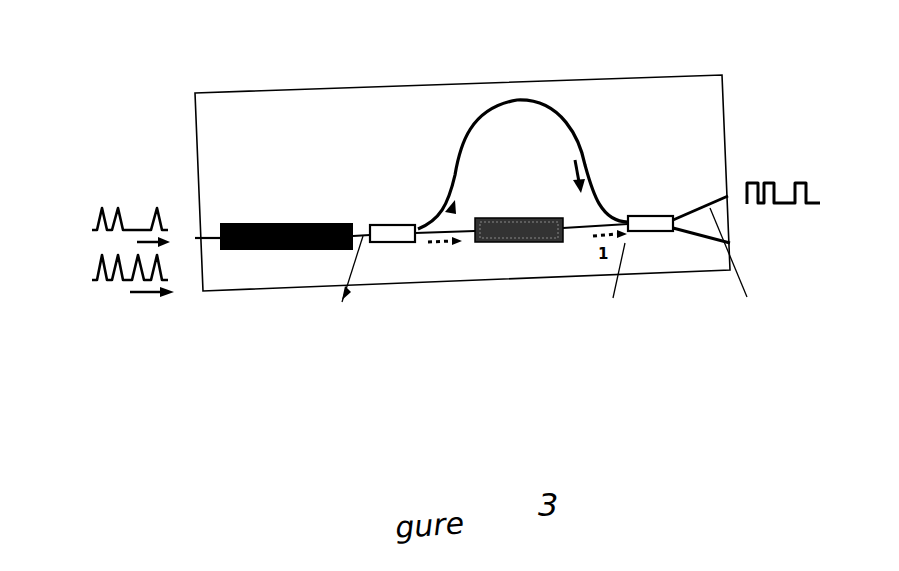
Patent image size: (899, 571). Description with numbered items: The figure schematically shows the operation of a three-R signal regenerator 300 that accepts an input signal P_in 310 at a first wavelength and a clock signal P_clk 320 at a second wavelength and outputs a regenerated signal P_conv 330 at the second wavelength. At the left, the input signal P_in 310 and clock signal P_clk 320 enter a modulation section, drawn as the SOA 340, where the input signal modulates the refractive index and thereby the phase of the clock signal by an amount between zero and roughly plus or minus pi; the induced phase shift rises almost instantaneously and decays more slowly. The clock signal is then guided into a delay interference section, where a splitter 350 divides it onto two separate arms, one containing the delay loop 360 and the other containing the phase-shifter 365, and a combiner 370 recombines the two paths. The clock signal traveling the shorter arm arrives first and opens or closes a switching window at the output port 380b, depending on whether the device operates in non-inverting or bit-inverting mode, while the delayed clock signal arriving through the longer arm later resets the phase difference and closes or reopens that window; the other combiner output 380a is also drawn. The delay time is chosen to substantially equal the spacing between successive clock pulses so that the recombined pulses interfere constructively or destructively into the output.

The 3R signal regenerator 300 is at (797, 62).
The input signal P_in 310 is at (83, 216).
The clock signal P_clk 320 is at (83, 276).
The regenerated signal P_conv 330 is at (823, 174).
The semiconductor optical amplifier (SOA) 340 is at (267, 213).
The splitter 350 is at (403, 195).
The delay loop 360 is at (565, 140).
The phase-shifter 365 is at (508, 218).
The combiner 370 is at (663, 188).
The first combiner output 380a is at (732, 185).
The output port 380b is at (733, 229).